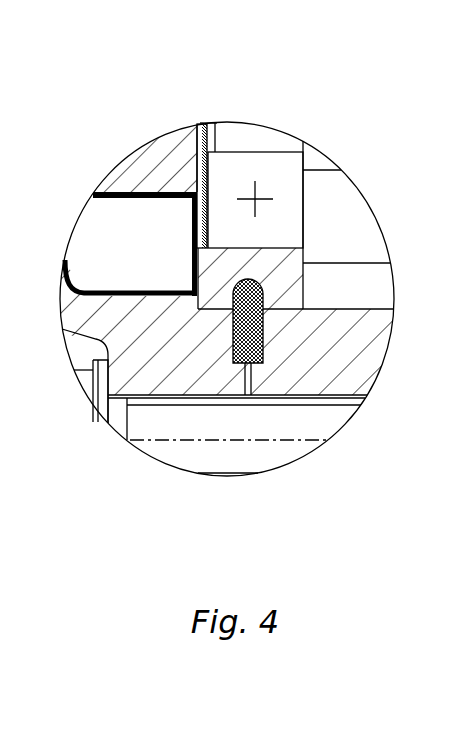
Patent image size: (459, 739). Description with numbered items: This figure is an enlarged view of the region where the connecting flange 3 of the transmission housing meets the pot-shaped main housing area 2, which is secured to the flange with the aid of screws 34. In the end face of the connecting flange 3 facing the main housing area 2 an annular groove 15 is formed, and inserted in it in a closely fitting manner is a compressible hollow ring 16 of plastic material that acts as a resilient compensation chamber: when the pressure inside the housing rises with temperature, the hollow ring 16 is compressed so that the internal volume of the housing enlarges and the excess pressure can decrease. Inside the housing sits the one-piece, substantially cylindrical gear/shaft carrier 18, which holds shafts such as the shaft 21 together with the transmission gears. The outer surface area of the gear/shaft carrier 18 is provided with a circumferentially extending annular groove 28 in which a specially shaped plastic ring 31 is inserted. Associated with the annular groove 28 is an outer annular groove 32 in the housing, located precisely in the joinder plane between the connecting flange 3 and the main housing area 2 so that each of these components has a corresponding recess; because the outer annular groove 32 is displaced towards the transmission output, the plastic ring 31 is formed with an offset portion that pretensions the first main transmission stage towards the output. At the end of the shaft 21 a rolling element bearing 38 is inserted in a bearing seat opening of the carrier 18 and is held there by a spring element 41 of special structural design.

The main housing area 2 is at (360, 355).
The connecting flange 3 is at (177, 143).
The annular groove 15 is at (127, 205).
The hollow ring 16 is at (150, 190).
The gear/shaft carrier 18 is at (273, 292).
The shaft 21 is at (313, 158).
The annular groove 28 is at (303, 245).
The plastic ring 31 is at (243, 365).
The outer annular groove 32 is at (253, 365).
The screws 34 is at (85, 382).
The rolling element bearing 38 is at (235, 183).
The spring element 41 is at (197, 233).